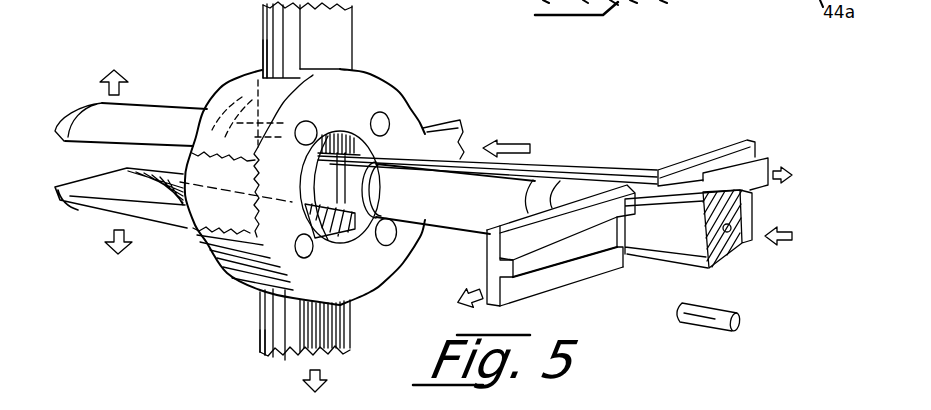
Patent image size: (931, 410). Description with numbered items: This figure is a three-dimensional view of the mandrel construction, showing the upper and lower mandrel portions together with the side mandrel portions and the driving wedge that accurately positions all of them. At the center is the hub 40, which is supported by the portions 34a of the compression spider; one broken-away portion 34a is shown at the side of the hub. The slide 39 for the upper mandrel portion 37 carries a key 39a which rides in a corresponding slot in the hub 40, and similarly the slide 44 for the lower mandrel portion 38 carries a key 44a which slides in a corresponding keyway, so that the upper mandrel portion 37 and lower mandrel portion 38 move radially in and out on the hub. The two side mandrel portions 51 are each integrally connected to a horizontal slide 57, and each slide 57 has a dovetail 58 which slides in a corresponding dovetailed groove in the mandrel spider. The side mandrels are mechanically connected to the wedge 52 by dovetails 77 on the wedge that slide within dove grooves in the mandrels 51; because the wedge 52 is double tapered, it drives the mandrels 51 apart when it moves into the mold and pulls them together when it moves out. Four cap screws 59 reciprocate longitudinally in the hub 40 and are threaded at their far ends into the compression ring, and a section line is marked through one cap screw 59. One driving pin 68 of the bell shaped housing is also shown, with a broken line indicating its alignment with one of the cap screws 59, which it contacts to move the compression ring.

The portions of the compression spider 34a is at (455, 120).
The upper mandrel portion 37 is at (161, 105).
The lower mandrel portion 38 is at (156, 226).
The slide for the upper mandrel portion 39 is at (352, 33).
The key 39a is at (262, 43).
The hub 40 is at (403, 79).
The slide for the lower mandrel portion 44 is at (260, 322).
The key 44a is at (265, 350).
The side mandrel portions 51 is at (572, 158).
The wedge 52 is at (734, 258).
The horizontal slide 57 is at (512, 305).
The dovetail 58 is at (627, 223).
The cap screws 59 is at (313, 125).
The driving pin 68 is at (684, 327).
The dovetails on the wedge 77 is at (760, 217).